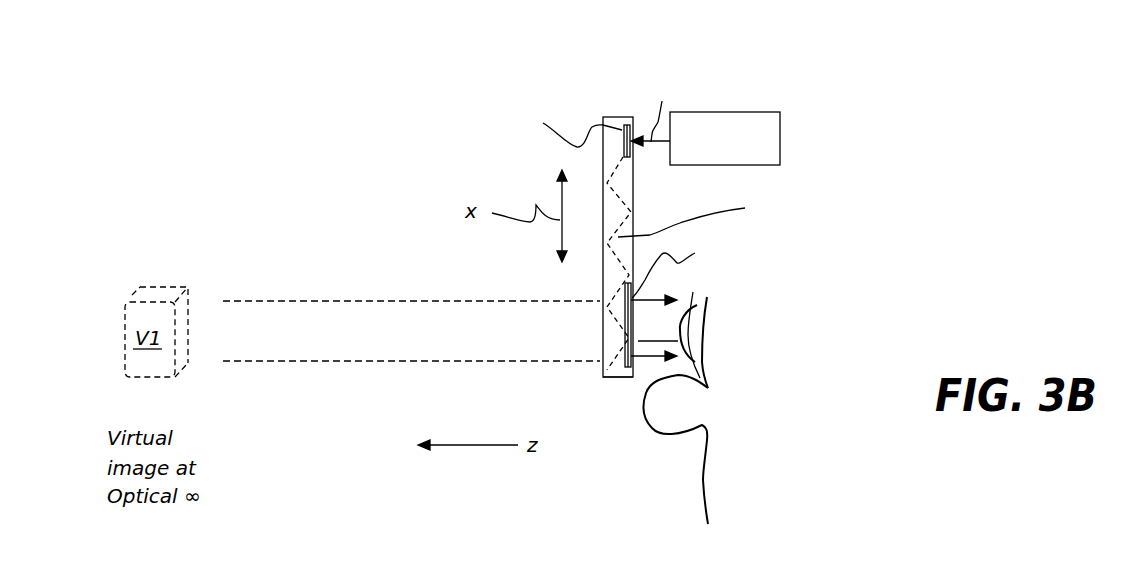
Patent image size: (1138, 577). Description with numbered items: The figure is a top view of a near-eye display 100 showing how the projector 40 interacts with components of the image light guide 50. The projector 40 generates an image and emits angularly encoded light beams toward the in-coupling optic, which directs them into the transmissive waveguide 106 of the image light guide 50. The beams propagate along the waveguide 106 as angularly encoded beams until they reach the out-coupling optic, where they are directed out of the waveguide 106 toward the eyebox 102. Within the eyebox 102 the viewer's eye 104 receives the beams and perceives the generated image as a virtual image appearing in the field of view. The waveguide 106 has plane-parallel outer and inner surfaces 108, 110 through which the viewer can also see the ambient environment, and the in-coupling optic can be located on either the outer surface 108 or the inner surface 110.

The near-eye display 100 is at (709, 75).
The projector 40 is at (729, 149).
The image light guide 50 is at (603, 272).
The outer surface 108 is at (603, 155).
The inner surface 110 is at (633, 207).
The transmissive waveguide 106 is at (603, 372).
The viewer's eye 104 is at (693, 292).
The eyebox 102 is at (655, 358).